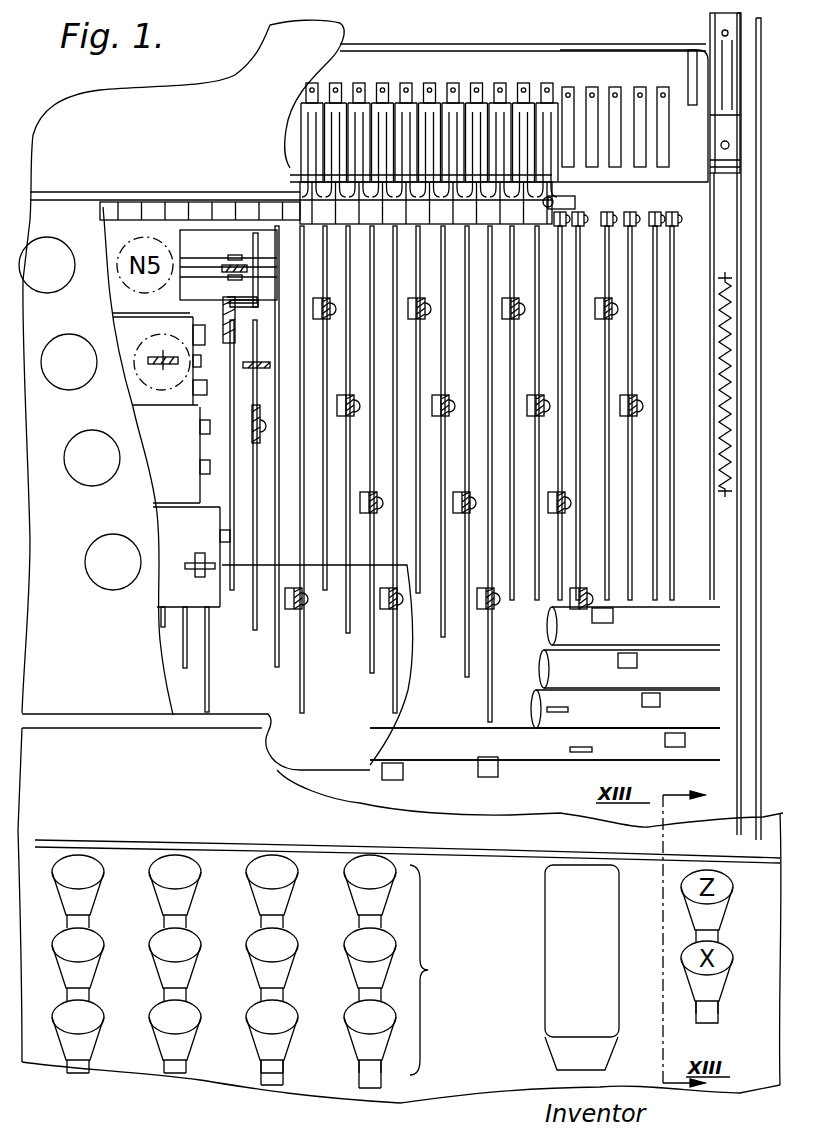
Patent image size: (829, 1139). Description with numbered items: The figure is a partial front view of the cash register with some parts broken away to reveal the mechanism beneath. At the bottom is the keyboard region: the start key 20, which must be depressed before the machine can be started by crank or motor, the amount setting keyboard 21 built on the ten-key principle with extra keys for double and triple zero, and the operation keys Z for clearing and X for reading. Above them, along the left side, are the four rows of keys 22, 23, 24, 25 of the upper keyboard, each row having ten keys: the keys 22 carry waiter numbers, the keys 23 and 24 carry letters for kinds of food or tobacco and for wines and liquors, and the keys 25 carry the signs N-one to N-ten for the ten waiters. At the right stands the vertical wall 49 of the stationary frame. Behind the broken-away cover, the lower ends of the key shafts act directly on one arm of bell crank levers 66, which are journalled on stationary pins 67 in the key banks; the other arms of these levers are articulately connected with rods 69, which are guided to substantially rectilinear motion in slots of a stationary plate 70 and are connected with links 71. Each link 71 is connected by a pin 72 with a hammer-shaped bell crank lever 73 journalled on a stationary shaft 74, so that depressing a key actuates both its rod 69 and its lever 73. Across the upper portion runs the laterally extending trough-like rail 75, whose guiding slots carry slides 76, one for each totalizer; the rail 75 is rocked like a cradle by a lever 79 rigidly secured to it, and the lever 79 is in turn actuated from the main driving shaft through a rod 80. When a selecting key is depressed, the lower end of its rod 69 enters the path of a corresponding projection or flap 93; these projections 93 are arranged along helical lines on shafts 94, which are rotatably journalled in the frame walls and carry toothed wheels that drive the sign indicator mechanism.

The start key 20 is at (545, 1017).
The amount setting keyboard 21 is at (256, 971).
The row of keys 22 is at (105, 588).
The row of keys 23 is at (90, 485).
The row of keys 24 is at (78, 388).
The row of keys 25 is at (60, 292).
The vertical wall 49 is at (748, 298).
The bell crank lever 66 is at (252, 378).
The stationary pin 67 is at (248, 422).
The rod 69 is at (608, 548).
The stationary plate 70 is at (377, 692).
The link 71 is at (248, 330).
The pin 72 is at (666, 216).
The bell crank lever 73 is at (533, 110).
The stationary shaft 74 is at (575, 203).
The trough-like rail 75 is at (692, 100).
The slide 76 is at (608, 90).
The lever 79 is at (735, 68).
The rod 80 is at (718, 402).
The projection 93 is at (680, 740).
The shaft 94 is at (548, 660).